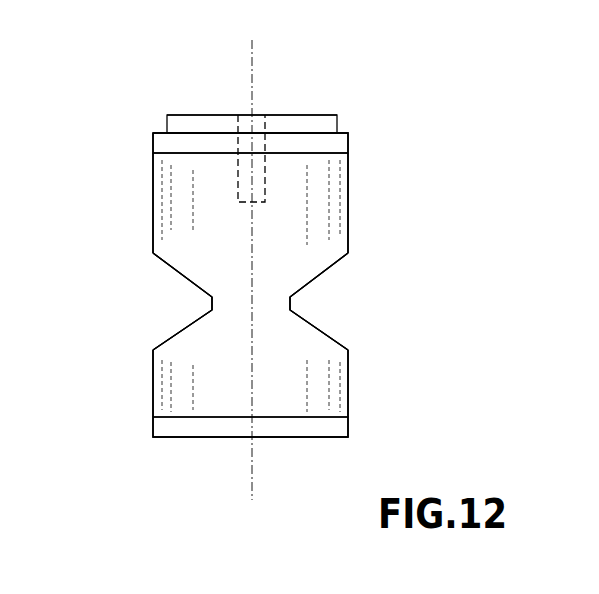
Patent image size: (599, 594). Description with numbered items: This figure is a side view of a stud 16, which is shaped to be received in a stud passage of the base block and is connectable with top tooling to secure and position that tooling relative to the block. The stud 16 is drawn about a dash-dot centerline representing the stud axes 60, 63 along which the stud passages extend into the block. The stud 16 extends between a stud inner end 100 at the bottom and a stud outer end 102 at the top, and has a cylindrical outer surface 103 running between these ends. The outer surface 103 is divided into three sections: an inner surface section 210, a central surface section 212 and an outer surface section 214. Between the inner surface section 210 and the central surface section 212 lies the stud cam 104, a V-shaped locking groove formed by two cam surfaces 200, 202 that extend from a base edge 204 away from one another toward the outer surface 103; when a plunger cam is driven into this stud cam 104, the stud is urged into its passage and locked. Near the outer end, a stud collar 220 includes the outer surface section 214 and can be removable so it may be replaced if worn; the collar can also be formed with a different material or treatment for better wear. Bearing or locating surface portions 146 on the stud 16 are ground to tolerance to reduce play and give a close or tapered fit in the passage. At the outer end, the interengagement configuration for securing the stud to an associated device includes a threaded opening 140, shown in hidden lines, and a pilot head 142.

The stud 16 is at (362, 68).
The stud axis 60 is at (201, 270).
The stud axis 63 is at (250, 478).
The stud inner end 100 is at (298, 437).
The stud outer end 102 is at (297, 115).
The outer surface 103 is at (350, 388).
The stud cam 104 is at (336, 306).
The threaded opening 140 is at (238, 127).
The pilot head 142 is at (338, 121).
The bearing portion 146 is at (348, 143).
The cam surface 200 is at (178, 272).
The cam surface 202 is at (172, 335).
The base edge 204 is at (212, 302).
The inner surface section 210 is at (153, 392).
The central surface section 212 is at (153, 207).
The outer surface section 214 is at (154, 133).
The stud collar 220 is at (153, 142).